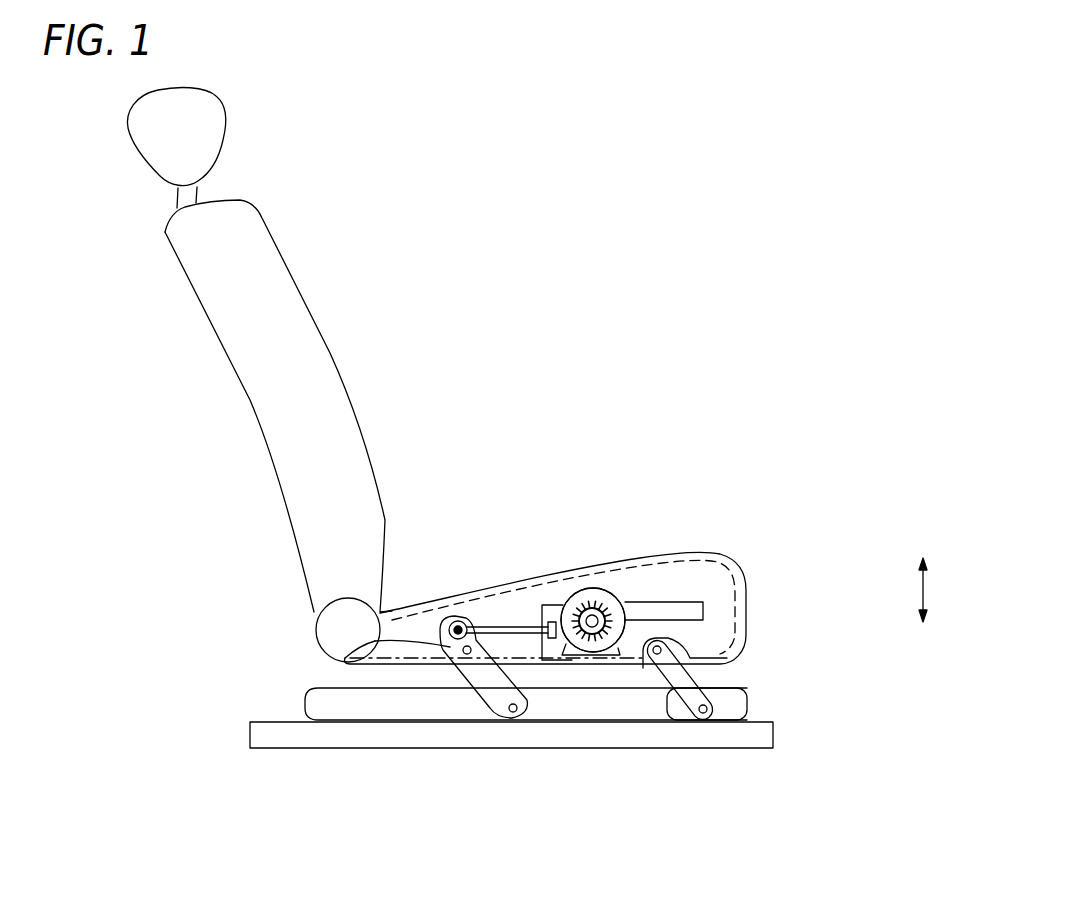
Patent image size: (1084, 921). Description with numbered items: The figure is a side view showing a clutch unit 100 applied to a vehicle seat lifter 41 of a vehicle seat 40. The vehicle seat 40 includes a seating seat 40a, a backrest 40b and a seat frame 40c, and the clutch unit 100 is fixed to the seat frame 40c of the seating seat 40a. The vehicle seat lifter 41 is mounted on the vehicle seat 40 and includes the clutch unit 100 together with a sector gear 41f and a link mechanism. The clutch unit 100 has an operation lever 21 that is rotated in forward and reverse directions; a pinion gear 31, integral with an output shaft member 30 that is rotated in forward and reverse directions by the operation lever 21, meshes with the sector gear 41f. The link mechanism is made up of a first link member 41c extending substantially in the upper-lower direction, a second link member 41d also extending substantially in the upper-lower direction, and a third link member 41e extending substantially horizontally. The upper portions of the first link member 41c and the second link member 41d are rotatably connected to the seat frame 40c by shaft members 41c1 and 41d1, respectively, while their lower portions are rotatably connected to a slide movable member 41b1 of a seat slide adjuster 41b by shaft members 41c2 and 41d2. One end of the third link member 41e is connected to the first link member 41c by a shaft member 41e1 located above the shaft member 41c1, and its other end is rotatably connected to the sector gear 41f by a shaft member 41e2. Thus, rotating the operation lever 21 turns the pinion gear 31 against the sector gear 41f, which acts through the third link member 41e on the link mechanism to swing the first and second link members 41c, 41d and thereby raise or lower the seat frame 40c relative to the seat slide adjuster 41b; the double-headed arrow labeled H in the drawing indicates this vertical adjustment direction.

The vehicle seat 40 is at (258, 538).
The seating seat 40a is at (723, 555).
The backrest 40b is at (293, 322).
The seat frame 40c is at (750, 637).
The operation lever 21 is at (703, 618).
The vehicle seat lifter 41 is at (730, 455).
The seat slide adjuster 41b is at (316, 764).
The slide movable member 41b1 is at (412, 708).
The first link member 41c is at (483, 690).
The shaft member 41c1 is at (375, 641).
The shaft member 41c2 is at (513, 708).
The second link member 41d is at (665, 680).
The shaft member 41d1 is at (705, 657).
The shaft member 41d2 is at (745, 707).
The third link member 41e is at (503, 627).
The shaft member 41e1 is at (456, 623).
The shaft member 41e2 is at (540, 657).
The sector gear 41f is at (547, 605).
The output shaft member 30 is at (603, 655).
The pinion gear 31 is at (598, 605).
The clutch unit 100 is at (632, 585).
The height adjustment range H is at (940, 590).